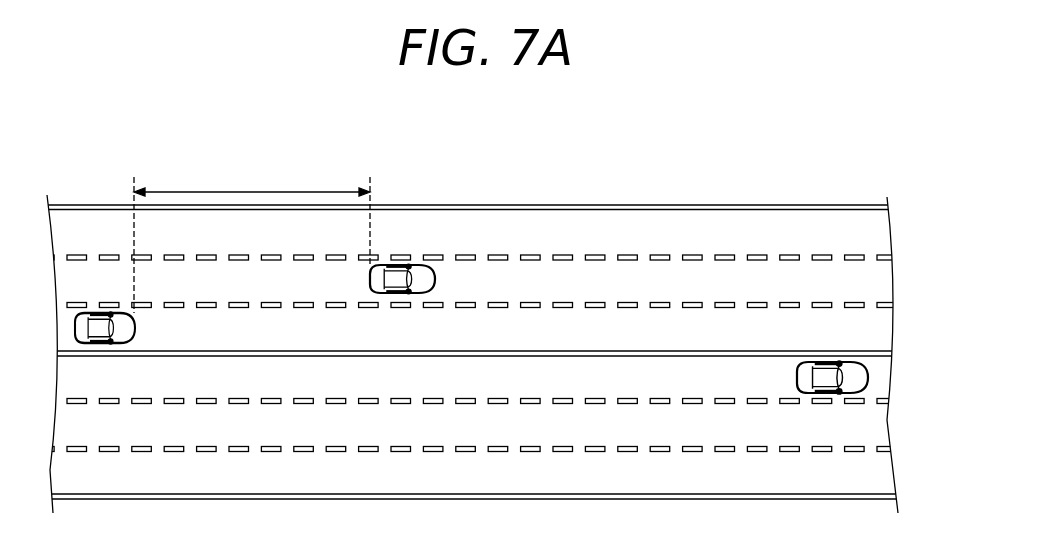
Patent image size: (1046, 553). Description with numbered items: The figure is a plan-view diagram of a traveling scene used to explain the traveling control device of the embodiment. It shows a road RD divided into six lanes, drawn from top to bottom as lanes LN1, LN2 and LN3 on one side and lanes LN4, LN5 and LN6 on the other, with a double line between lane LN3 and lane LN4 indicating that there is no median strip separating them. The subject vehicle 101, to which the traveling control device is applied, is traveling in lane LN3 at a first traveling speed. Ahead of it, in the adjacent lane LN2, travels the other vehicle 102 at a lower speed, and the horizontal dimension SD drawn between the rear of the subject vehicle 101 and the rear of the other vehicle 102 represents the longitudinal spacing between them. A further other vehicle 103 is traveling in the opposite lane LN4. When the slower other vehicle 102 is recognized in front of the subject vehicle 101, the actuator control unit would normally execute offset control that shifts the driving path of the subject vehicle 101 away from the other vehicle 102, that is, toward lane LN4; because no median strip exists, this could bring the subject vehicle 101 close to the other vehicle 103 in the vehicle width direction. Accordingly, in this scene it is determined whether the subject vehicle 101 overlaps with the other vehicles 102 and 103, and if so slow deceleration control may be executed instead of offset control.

The subject vehicle 101 is at (103, 343).
The other vehicle 102 is at (400, 265).
The other vehicle 103 is at (813, 363).
The road RD is at (830, 203).
The lane LN1 is at (875, 235).
The lane LN2 is at (875, 283).
The lane LN3 is at (875, 332).
The lane LN4 is at (875, 380).
The lane LN5 is at (875, 428).
The lane LN6 is at (875, 477).
The safe distance SD is at (252, 240).